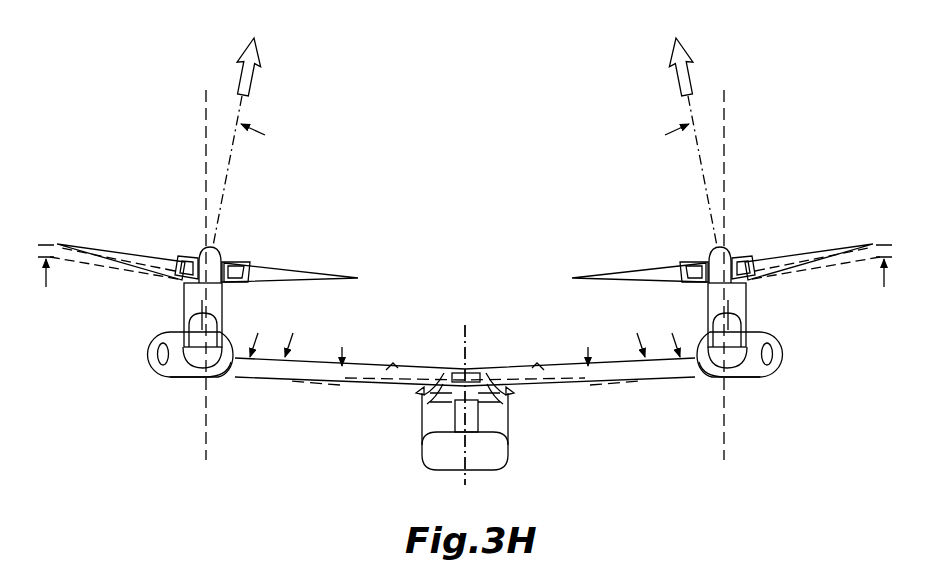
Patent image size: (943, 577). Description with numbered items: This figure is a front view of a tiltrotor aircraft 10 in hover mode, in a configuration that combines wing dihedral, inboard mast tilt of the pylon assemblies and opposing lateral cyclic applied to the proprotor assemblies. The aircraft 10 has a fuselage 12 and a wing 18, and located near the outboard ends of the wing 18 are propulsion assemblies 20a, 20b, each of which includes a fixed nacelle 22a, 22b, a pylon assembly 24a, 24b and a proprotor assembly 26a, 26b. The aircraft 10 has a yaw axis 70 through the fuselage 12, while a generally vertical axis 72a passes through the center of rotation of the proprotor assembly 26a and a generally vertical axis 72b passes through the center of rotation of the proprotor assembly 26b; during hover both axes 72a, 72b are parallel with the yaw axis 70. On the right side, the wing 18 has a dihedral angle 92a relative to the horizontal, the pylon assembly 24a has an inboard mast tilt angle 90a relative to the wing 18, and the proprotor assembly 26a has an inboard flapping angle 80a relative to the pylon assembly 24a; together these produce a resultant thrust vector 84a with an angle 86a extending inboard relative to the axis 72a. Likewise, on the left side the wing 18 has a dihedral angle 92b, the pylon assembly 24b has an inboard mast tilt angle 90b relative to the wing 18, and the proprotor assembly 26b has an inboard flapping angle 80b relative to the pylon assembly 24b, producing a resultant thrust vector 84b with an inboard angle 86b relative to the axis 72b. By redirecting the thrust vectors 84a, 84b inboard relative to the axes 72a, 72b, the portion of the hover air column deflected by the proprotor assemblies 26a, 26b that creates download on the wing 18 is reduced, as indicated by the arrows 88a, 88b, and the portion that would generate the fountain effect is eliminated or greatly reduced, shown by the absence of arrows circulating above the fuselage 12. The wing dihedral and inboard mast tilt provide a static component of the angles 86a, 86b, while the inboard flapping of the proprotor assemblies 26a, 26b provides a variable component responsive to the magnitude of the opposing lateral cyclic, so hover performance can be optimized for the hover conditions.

The tiltrotor aircraft 10 is at (505, 312).
The fuselage 12 is at (509, 448).
The wing 18 is at (272, 380).
The propulsion assembly 20a is at (783, 366).
The propulsion assembly 20b is at (148, 357).
The fixed nacelle 22a is at (755, 377).
The fixed nacelle 22b is at (168, 381).
The pylon assembly 24a is at (746, 300).
The pylon assembly 24b is at (163, 322).
The proprotor assembly 26a is at (767, 260).
The proprotor assembly 26b is at (204, 237).
The yaw axis 70 is at (464, 335).
The generally vertical axis 72a is at (726, 427).
The generally vertical axis 72b is at (163, 275).
The inboard flapping angle 80a is at (879, 242).
The inboard flapping angle 80b is at (58, 242).
The resultant thrust vector 84a is at (678, 82).
The resultant thrust vector 84b is at (272, 141).
The thrust vector angle 86a is at (730, 122).
The thrust vector angle 86b is at (201, 124).
The arrows 88a is at (611, 357).
The arrows 88b is at (290, 327).
The inboard mast tilt angle 90a is at (700, 313).
The inboard mast tilt angle 90b is at (181, 315).
The dihedral angle 92a is at (588, 387).
The dihedral angle 92b is at (325, 391).